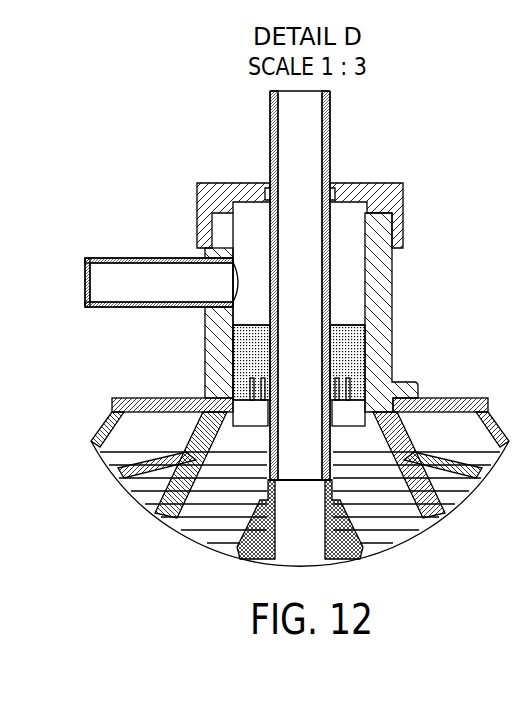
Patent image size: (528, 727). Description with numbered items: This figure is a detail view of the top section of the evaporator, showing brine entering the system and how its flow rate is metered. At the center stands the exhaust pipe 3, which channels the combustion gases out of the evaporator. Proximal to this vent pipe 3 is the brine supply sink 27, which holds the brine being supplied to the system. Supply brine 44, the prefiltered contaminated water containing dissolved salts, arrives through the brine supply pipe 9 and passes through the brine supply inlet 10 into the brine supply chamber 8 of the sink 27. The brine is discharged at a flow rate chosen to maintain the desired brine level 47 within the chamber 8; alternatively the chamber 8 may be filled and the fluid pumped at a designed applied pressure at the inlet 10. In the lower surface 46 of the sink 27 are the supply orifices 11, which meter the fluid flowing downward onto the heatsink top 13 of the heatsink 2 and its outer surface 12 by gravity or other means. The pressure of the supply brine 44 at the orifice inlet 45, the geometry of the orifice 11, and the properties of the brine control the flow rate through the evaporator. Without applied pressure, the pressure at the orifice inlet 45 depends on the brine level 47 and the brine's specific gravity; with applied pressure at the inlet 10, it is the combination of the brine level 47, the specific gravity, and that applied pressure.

The heatsink 2 is at (237, 553).
The exhaust pipe 3 is at (270, 148).
The brine supply chamber 8 is at (255, 247).
The brine supply pipe 9 is at (150, 260).
The brine supply inlet 10 is at (85, 286).
The supply orifice 11 is at (357, 390).
The outer surface 12 is at (353, 535).
The heatsink top 13 is at (357, 490).
The brine supply sink 27 is at (398, 290).
The supply brine 44 is at (205, 352).
The orifice inlet 45 is at (358, 372).
The lower surface 46 is at (332, 381).
The brine level 47 is at (242, 322).